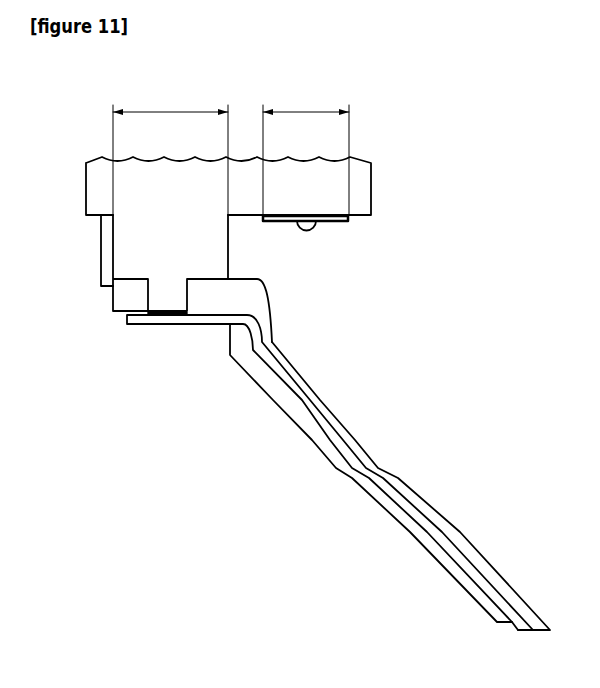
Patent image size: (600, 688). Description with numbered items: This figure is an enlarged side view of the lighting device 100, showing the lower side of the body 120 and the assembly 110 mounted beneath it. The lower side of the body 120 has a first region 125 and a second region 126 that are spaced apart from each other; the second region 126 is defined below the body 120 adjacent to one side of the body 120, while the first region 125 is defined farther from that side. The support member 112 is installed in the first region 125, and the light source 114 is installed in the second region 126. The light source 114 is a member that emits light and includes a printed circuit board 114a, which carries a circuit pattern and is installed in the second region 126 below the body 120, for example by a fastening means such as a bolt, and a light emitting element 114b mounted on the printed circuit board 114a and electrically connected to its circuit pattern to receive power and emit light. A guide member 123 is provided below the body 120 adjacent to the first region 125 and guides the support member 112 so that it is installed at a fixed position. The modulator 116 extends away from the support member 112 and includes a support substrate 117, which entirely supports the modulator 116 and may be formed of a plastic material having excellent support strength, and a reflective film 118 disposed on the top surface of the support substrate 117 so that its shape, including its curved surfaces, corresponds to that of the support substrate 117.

The display device 100 is at (66, 104).
The display panel assembly 110 is at (480, 252).
The support member 112 is at (230, 252).
The light source 114 is at (438, 243).
The printed circuit board 114a is at (345, 222).
The light emitting element 114b is at (317, 233).
The modulator 116 is at (359, 405).
The support substrate 117 is at (315, 465).
The reflective film 118 is at (417, 467).
The body 120 is at (393, 165).
The guide member 123 is at (101, 252).
The first region 125 is at (170, 150).
The second region 126 is at (306, 150).